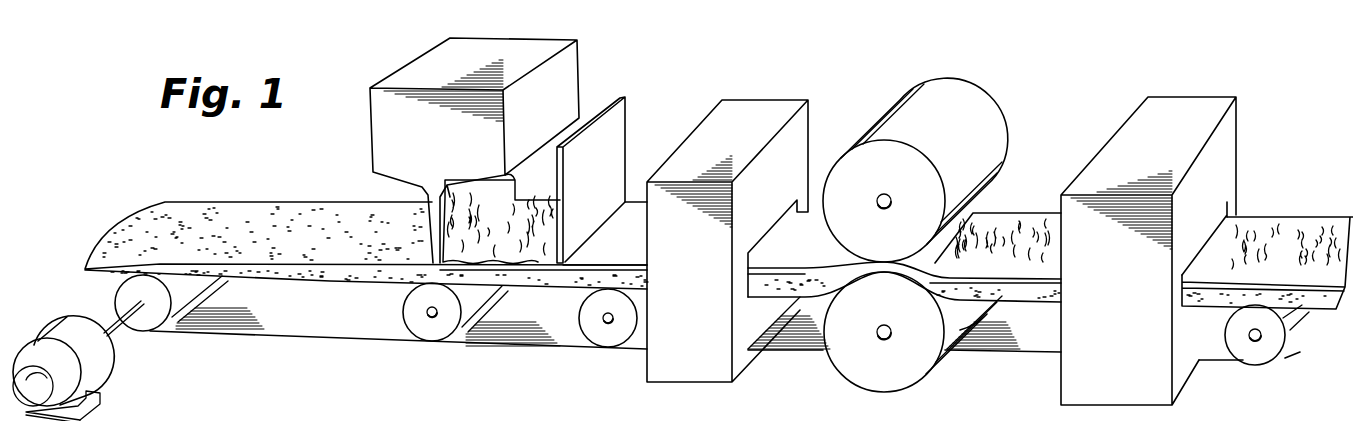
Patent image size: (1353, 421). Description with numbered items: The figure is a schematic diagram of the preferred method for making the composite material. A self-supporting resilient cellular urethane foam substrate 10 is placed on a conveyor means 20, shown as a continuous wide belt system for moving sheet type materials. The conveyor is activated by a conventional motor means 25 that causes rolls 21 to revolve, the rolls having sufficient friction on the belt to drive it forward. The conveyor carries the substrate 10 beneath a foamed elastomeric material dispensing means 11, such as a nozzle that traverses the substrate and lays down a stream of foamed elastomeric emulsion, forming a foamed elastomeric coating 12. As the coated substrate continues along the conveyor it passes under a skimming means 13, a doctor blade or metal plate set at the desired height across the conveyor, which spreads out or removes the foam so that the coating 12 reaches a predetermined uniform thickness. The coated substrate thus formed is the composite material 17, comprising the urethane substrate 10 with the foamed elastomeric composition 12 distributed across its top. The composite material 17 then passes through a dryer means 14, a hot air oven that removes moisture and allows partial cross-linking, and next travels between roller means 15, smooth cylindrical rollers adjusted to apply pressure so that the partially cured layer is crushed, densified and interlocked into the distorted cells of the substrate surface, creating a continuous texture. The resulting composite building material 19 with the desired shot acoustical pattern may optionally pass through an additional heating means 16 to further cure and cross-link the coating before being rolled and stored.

The urethane foam substrate 10 is at (182, 200).
The dispensing means 11 is at (567, 68).
The foamed elastomeric coating 12 is at (600, 257).
The skimming means 13 is at (620, 125).
The dryer means 14 is at (774, 103).
The roller means 15 is at (950, 95).
The additional heating means 16 is at (1188, 103).
The composite material 17 is at (581, 269).
The composite building material 19 is at (1005, 213).
The conveyor means 20 is at (307, 321).
The rolls 21 is at (445, 333).
The motor means 25 is at (112, 372).